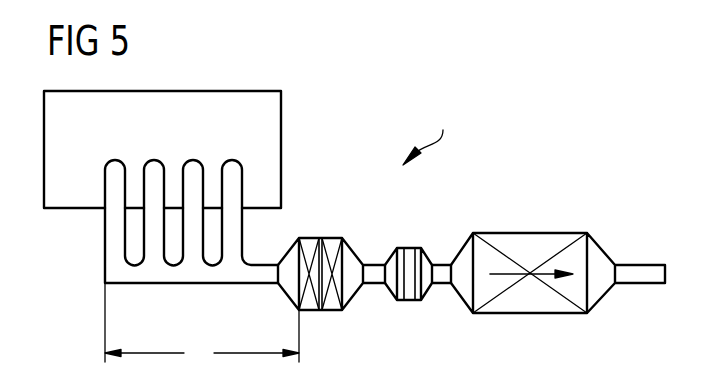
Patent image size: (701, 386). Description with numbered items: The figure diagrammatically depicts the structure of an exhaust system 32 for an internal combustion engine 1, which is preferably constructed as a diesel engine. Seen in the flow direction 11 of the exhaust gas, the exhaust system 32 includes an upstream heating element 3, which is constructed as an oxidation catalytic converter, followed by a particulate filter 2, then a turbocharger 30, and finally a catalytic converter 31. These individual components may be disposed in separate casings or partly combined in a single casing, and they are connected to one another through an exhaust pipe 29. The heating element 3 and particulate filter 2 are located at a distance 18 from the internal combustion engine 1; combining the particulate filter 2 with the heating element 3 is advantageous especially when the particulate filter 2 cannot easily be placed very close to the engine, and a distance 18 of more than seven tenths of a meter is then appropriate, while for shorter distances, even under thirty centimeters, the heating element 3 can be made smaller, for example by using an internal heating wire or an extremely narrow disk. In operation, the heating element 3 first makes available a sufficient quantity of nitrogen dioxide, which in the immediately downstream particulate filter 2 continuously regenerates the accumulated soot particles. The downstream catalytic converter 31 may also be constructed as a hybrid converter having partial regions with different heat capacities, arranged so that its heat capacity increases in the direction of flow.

The internal combustion engine 1 is at (272, 145).
The distance 18 is at (202, 326).
The particulate filter 2 is at (335, 240).
The heating element 3 is at (310, 240).
The turbocharger 30 is at (408, 257).
The exhaust pipe 29 is at (440, 278).
The catalytic converter 31 is at (532, 247).
The flow direction 11 is at (507, 275).
The exhaust system 32 is at (430, 134).